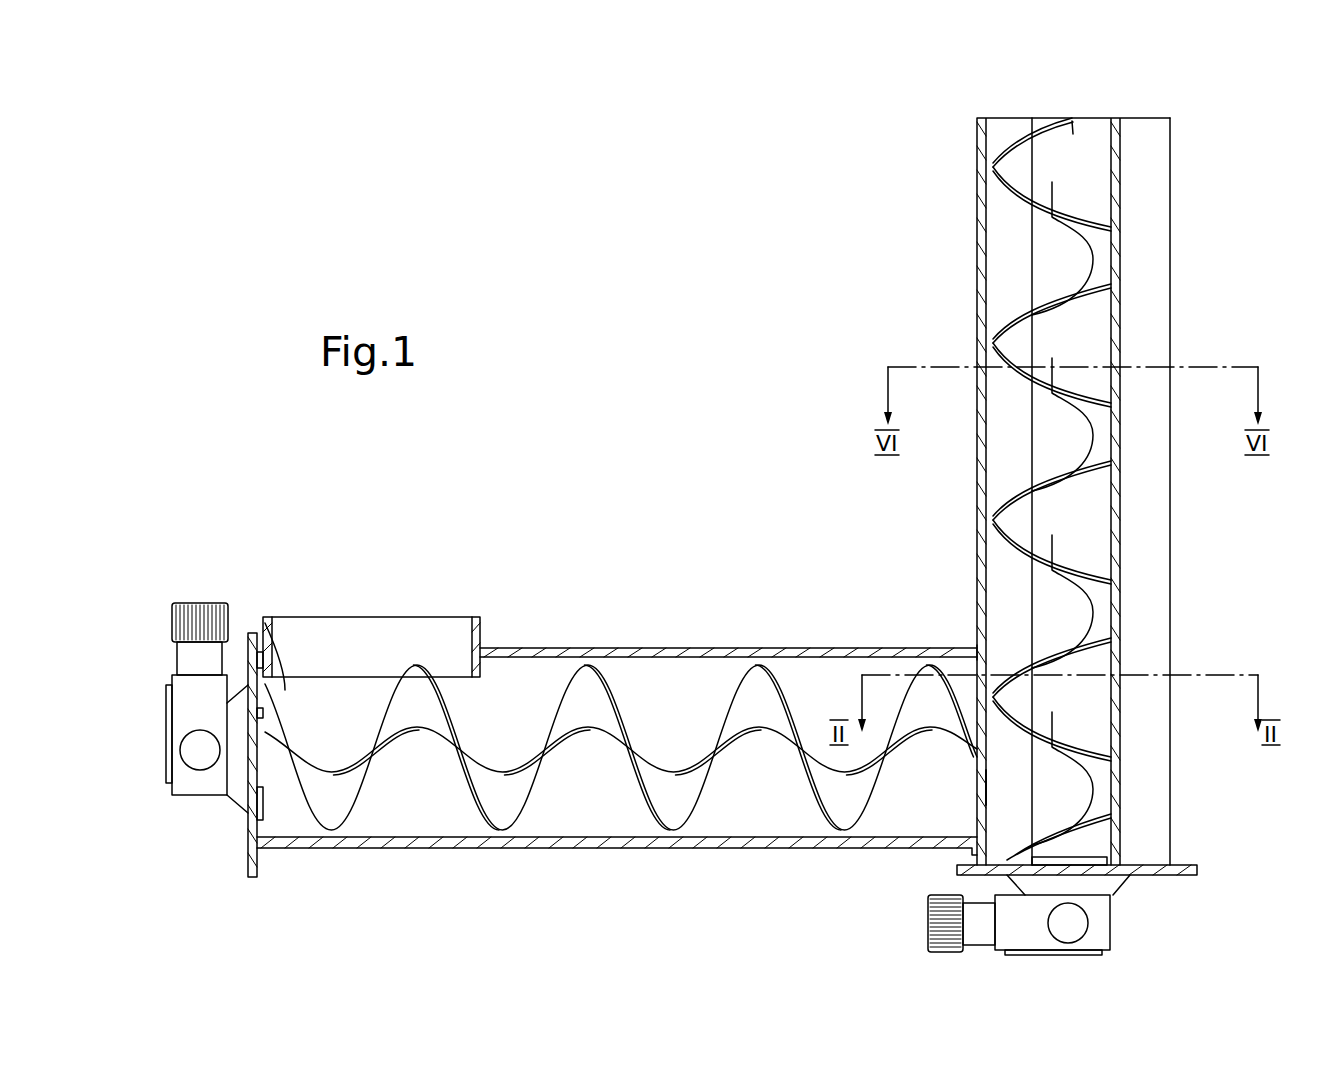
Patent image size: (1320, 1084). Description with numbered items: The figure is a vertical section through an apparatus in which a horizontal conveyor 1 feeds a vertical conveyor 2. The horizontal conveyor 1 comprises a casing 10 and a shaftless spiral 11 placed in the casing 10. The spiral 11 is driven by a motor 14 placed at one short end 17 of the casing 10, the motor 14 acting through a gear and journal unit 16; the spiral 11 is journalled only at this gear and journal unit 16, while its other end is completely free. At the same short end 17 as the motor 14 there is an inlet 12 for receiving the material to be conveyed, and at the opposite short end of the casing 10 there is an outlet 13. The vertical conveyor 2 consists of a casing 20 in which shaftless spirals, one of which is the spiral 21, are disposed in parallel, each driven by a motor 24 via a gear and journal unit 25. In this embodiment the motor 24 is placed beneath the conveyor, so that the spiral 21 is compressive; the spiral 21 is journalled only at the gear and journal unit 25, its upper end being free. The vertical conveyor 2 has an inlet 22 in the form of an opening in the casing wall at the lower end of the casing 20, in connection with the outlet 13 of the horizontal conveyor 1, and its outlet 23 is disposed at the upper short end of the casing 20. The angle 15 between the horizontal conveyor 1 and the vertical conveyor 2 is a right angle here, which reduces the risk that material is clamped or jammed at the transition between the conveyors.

The horizontal conveyor 1 is at (613, 552).
The vertical conveyor 2 is at (948, 229).
The casing 10 is at (517, 652).
The shaftless spiral 11 is at (483, 817).
The inlet 12 is at (310, 633).
The outlet 13 is at (990, 788).
The motor 14 is at (185, 650).
The angle 15 is at (966, 589).
The gear and journal unit 16 is at (195, 785).
The short end 17 is at (263, 620).
The casing 20 is at (1170, 528).
The shaftless spiral 21 is at (1107, 605).
The inlet 22 is at (990, 788).
The outlet 23 is at (1143, 128).
The motor 24 is at (935, 927).
The gear and journal unit 25 is at (1103, 923).